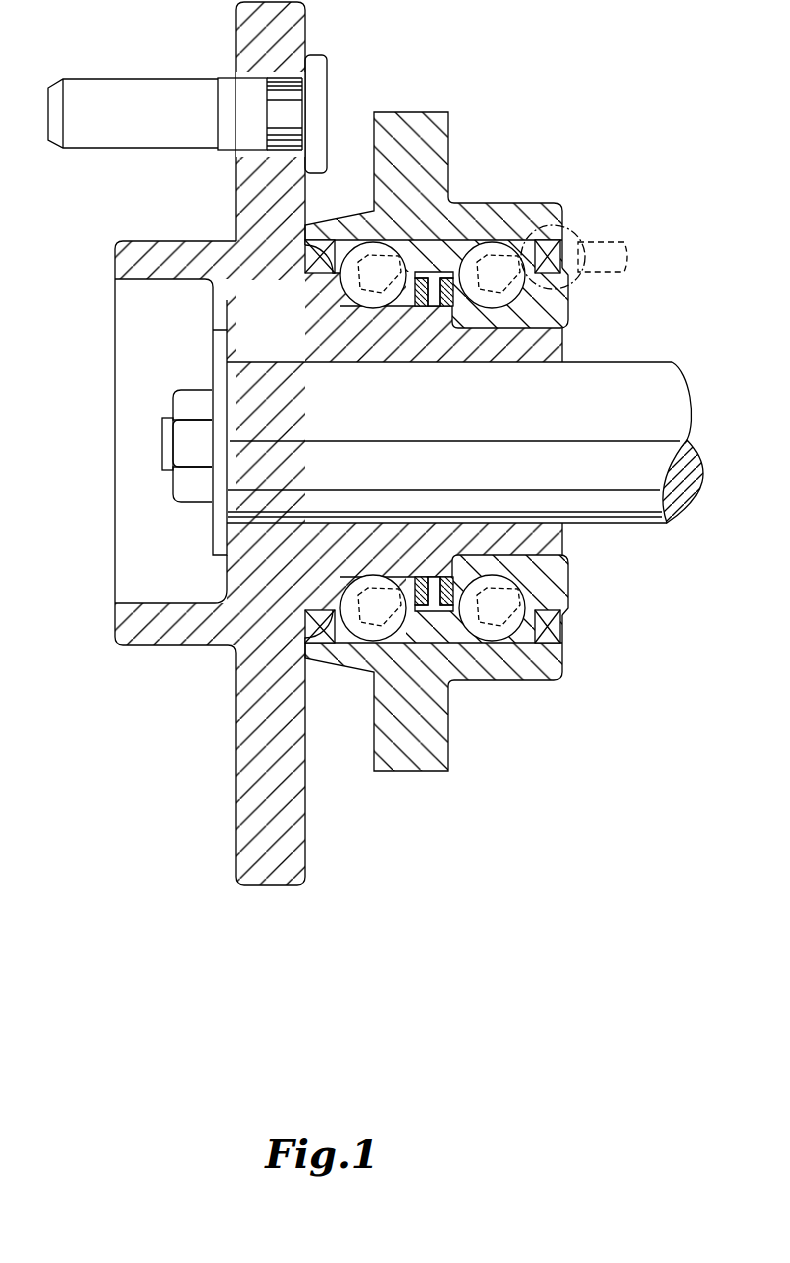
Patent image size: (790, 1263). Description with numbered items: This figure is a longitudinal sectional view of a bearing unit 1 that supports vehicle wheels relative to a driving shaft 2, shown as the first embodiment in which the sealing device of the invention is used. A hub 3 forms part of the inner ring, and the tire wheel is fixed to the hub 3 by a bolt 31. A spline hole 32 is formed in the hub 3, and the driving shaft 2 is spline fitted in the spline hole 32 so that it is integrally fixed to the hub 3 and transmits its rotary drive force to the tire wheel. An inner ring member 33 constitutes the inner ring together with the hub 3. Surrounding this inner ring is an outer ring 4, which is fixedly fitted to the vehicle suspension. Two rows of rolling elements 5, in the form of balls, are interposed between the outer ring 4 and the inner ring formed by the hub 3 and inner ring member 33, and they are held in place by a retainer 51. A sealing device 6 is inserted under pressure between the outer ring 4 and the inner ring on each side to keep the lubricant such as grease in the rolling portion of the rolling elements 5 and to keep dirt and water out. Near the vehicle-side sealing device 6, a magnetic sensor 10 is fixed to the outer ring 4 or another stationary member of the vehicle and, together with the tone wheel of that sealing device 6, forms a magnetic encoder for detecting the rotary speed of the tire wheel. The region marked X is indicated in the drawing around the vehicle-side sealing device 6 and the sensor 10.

The bearing unit 1 is at (525, 194).
The driving shaft 2 is at (613, 372).
The hub 3 is at (178, 632).
The bolt 31 is at (316, 78).
The spline hole 32 is at (297, 363).
The inner ring member 33 is at (553, 582).
The outer ring 4 is at (440, 737).
The rolling element 5 is at (483, 240).
The retainer 51 is at (423, 610).
The sealing device 6 is at (557, 255).
The magnetic sensor 10 is at (612, 242).
The detail region X is at (572, 226).